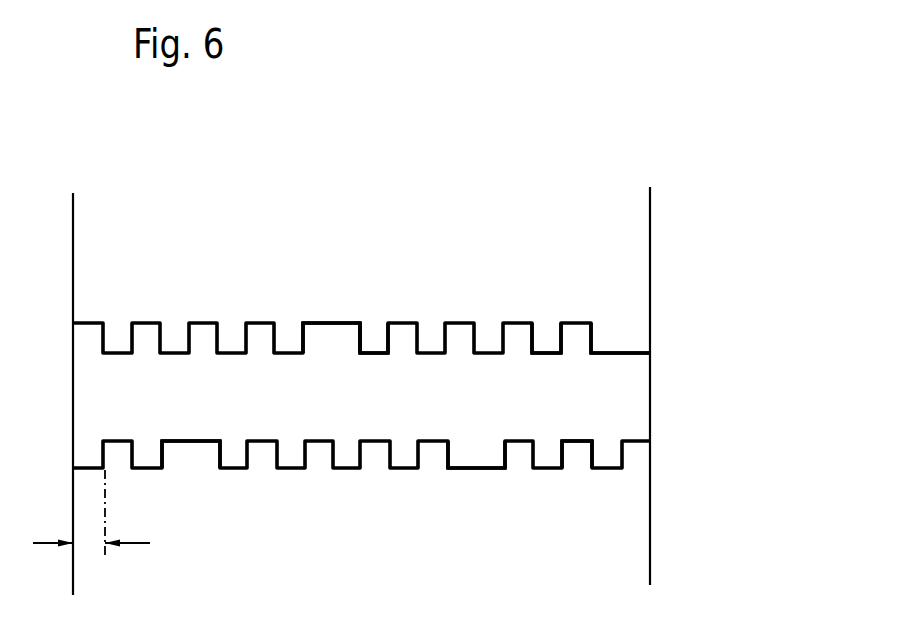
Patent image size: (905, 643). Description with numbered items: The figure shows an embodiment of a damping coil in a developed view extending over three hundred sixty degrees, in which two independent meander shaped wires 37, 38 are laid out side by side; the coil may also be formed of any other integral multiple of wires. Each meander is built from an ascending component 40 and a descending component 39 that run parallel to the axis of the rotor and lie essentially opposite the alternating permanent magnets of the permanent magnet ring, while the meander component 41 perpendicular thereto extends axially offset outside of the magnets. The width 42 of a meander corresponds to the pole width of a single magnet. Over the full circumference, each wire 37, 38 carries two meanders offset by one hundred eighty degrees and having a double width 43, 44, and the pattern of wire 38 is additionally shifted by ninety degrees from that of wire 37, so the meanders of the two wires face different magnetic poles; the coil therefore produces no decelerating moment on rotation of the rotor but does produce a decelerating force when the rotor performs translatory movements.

The meander shaped wire 37 is at (666, 335).
The meander shaped wire 38 is at (664, 454).
The descending component 39 is at (361, 337).
The ascending component 40 is at (561, 345).
The meander component 41 is at (547, 468).
The width 42 is at (88, 540).
The double width 43 is at (331, 323).
The double width 44 is at (190, 442).